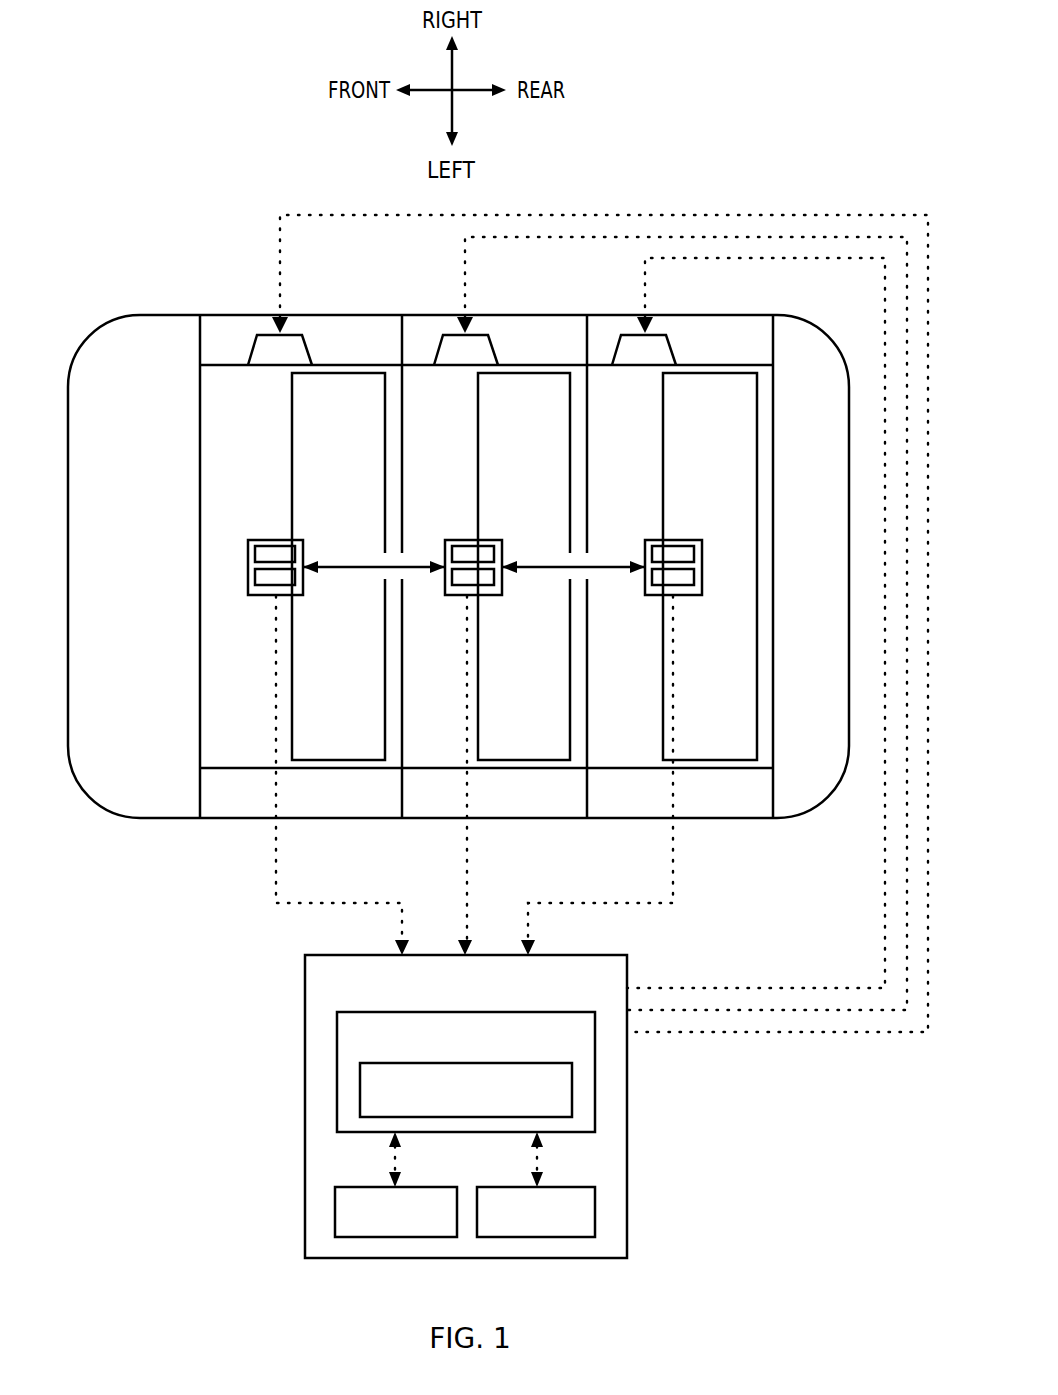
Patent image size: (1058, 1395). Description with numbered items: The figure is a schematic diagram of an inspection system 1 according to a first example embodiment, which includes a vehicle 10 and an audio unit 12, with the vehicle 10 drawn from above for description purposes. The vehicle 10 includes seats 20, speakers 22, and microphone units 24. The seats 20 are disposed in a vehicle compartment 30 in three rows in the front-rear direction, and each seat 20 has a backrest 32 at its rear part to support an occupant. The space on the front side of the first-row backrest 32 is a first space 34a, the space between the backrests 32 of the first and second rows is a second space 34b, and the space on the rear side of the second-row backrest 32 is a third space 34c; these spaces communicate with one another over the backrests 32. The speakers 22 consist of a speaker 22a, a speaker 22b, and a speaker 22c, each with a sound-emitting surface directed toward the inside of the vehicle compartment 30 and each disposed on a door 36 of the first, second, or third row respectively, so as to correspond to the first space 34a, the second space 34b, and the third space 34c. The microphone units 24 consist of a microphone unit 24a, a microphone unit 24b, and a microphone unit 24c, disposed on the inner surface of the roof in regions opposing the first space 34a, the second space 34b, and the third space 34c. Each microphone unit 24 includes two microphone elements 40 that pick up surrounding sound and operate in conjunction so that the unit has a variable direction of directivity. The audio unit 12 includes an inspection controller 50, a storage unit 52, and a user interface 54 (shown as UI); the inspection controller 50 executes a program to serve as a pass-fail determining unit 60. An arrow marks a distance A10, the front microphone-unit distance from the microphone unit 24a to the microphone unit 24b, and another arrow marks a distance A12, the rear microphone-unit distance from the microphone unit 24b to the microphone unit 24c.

The inspection system 1 is at (671, 168).
The vehicle 10 is at (156, 315).
The audio unit 12 is at (305, 983).
The seat 20 is at (340, 760).
The speaker 22 is at (210, 257).
The speaker 22a is at (268, 328).
The speaker 22b is at (452, 328).
The speaker 22c is at (632, 328).
The microphone unit 24 is at (228, 486).
The microphone unit 24a is at (283, 540).
The microphone unit 24b is at (471, 540).
The microphone unit 24c is at (650, 540).
The vehicle compartment 30 is at (214, 733).
The backrest 32 is at (385, 695).
The first space 34a is at (230, 752).
The second space 34b is at (430, 752).
The third space 34c is at (628, 752).
The door 36 is at (311, 313).
The microphone element 40 is at (257, 550).
The inspection controller 50 is at (337, 1044).
The storage unit 52 is at (393, 1238).
The user interface 54 is at (533, 1238).
The pass-fail determining unit 60 is at (360, 1094).
The front microphone-unit distance A10 is at (369, 561).
The rear microphone-unit distance A12 is at (558, 561).